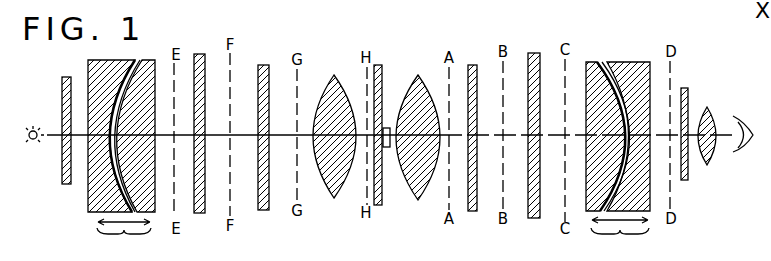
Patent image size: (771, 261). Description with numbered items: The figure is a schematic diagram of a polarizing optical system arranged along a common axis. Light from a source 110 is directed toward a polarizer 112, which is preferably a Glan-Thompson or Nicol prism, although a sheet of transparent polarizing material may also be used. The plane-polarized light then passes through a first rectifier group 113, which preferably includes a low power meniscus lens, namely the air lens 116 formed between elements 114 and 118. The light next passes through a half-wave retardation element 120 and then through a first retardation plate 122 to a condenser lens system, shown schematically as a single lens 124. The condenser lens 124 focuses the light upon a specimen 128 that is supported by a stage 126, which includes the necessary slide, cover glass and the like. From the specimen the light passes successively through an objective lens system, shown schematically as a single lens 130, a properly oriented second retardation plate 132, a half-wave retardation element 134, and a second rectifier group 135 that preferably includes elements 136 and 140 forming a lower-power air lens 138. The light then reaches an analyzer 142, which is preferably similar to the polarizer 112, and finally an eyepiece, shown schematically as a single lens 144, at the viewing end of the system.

The source 110 is at (28, 139).
The polarizer 112 is at (62, 160).
The first rectifier group 113 is at (124, 237).
The element 114 is at (102, 63).
The air lens 116 is at (139, 62).
The element 118 is at (158, 61).
The half-wave retardation element 120 is at (205, 56).
The first retardation plate 122 is at (269, 68).
The condenser lens 124 is at (325, 82).
The stage 126 is at (377, 63).
The specimen 128 is at (387, 149).
The objective lens 130 is at (433, 78).
The second retardation plate 132 is at (472, 65).
The half-wave retardation element 134 is at (527, 62).
The second rectifier group 135 is at (620, 238).
The element 136 is at (597, 63).
The air lens 138 is at (603, 63).
The element 140 is at (648, 66).
The analyzer 142 is at (689, 95).
The eyepiece 144 is at (713, 112).